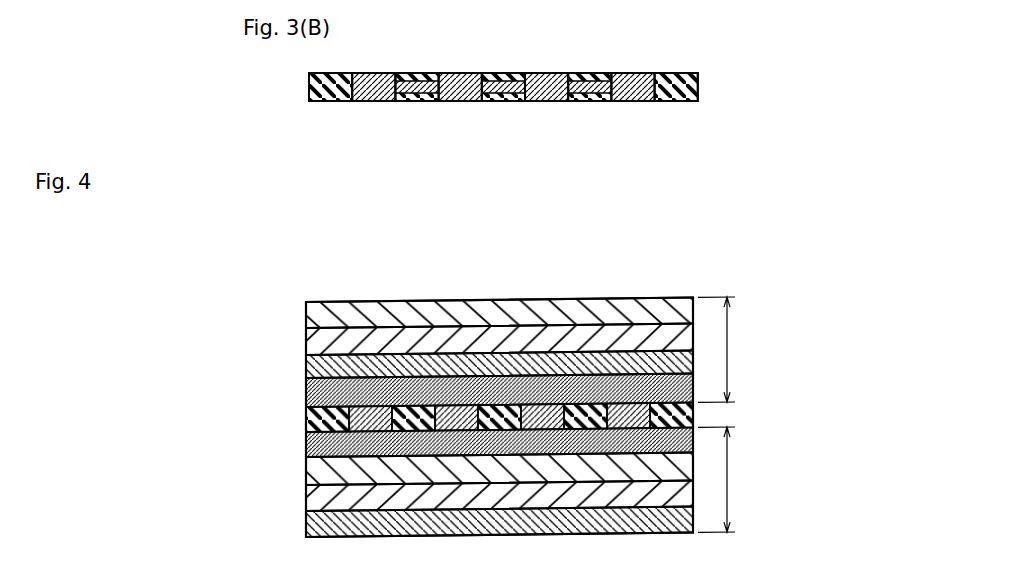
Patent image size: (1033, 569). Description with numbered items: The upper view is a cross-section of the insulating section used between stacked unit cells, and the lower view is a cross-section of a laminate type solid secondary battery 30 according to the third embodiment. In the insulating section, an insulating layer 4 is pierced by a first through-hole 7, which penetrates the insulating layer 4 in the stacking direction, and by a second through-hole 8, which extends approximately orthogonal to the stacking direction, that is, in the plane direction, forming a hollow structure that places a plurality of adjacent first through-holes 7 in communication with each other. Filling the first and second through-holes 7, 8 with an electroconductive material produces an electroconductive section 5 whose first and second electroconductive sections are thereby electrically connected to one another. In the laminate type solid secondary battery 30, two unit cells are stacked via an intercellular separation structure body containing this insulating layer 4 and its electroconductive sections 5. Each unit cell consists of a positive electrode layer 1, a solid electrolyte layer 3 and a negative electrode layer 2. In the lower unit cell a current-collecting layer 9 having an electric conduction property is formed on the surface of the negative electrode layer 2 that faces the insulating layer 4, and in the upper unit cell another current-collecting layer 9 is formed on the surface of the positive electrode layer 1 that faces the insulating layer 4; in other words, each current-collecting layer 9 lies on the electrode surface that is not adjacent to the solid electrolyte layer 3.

In FIG. 4, the positive electrode layer 1 is at (318, 365).
In FIG. 4, the negative electrode layer 2 is at (318, 314).
In FIG. 4, the solid electrolyte layer 3 is at (318, 340).
In FIG. 3B, the insulating layer 4 is at (335, 95).
In FIG. 4, the insulating layer 4 is at (318, 418).
In FIG. 3B, the electroconductive section 5 is at (630, 73).
In FIG. 4, the electroconductive section 5 is at (370, 417).
In FIG. 3B, the first through-hole 7 is at (556, 73).
In FIG. 3B, the second through-hole 8 is at (418, 92).
In FIG. 4, the current-collecting layer 9 is at (318, 391).
In FIG. 4, the laminate type solid secondary battery 30 is at (649, 271).